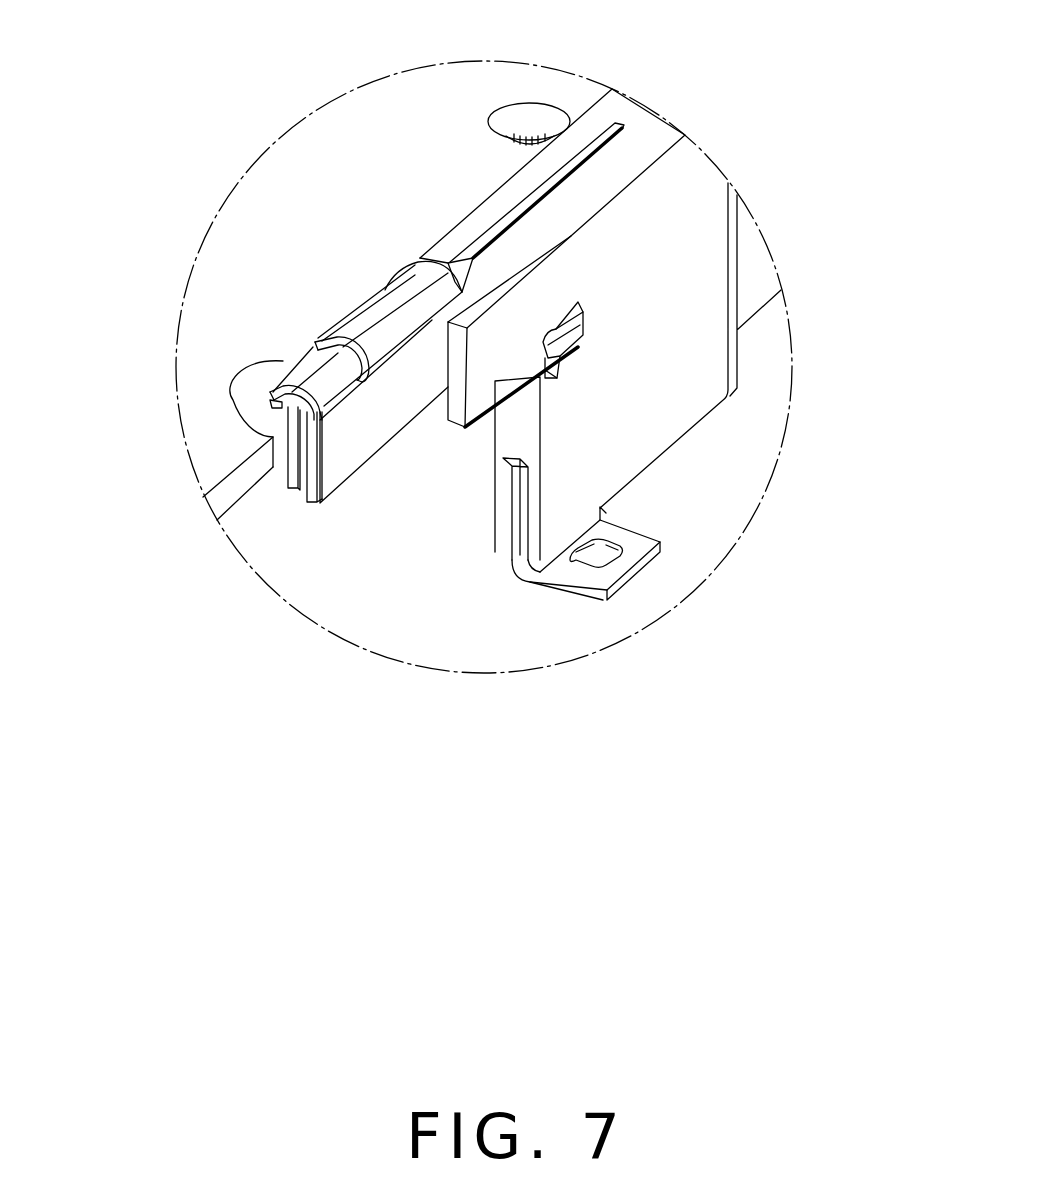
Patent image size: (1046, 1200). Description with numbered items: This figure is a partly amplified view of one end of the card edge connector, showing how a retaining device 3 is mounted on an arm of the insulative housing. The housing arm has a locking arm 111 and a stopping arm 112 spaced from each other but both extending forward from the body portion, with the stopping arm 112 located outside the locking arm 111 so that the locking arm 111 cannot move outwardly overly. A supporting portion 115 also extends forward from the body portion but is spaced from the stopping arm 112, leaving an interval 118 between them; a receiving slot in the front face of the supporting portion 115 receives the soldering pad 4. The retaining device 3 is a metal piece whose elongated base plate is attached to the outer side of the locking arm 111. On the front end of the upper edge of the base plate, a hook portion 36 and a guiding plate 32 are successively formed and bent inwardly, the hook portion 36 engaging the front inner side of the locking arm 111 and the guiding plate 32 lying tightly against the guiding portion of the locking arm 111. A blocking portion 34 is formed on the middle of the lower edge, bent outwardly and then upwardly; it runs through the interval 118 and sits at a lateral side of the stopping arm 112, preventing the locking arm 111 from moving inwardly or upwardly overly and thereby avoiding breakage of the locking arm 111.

The retaining device 3 is at (355, 433).
The soldering pad 4 is at (613, 570).
The guiding plate 32 is at (372, 318).
The blocking portion 34 is at (583, 305).
The hook portion 36 is at (310, 375).
The locking arm 111 is at (295, 453).
The stopping arm 112 is at (502, 337).
The supporting portion 115 is at (640, 455).
The interval 118 is at (557, 378).